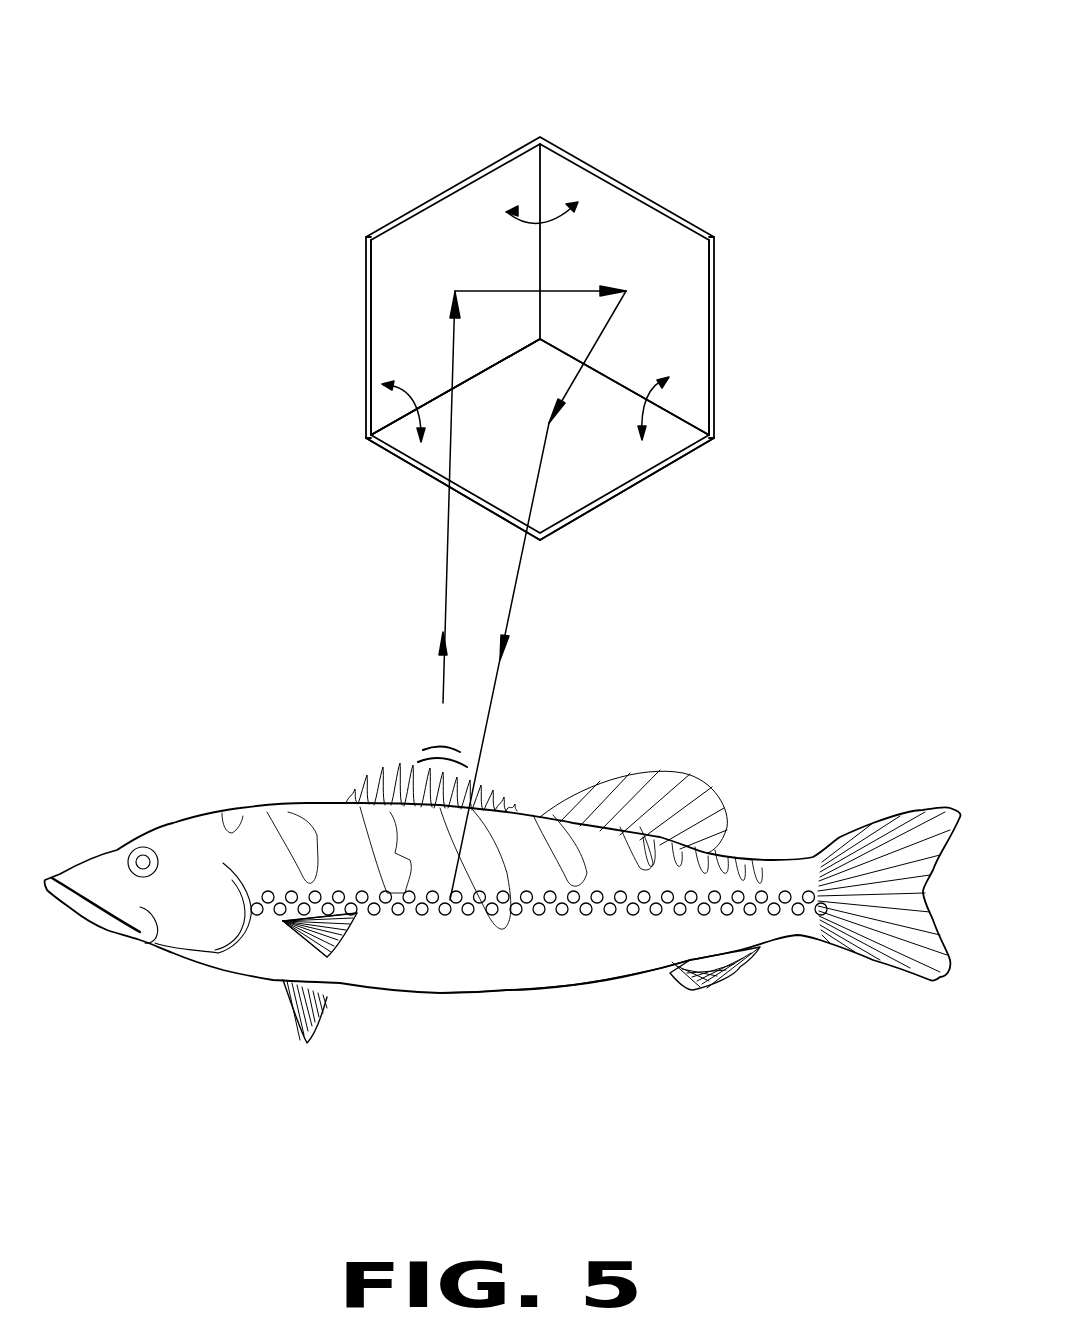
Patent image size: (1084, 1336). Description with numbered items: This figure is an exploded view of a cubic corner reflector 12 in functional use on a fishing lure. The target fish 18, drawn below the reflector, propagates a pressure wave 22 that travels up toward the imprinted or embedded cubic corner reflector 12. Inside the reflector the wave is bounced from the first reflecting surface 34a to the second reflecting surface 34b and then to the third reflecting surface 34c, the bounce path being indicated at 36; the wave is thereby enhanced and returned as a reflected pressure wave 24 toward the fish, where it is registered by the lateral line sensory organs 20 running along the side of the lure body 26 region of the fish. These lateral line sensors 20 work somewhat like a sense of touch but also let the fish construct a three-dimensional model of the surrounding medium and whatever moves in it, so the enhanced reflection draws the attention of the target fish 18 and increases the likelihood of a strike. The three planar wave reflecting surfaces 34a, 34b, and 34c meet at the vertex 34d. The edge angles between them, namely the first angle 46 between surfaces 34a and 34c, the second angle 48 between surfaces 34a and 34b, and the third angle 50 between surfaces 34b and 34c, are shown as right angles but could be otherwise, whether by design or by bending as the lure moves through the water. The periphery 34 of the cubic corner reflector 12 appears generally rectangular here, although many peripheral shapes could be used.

The cubic corner reflector 12 is at (540, 137).
The target fish 18 is at (170, 927).
The lateral line sensory organs 20 is at (470, 903).
The propagated pressure wave 22 is at (438, 747).
The reflected pressure wave 24 is at (490, 697).
The lure body 26 is at (558, 967).
The periphery of wave reflecting indentation 34 is at (397, 220).
The first reflecting surface 34a is at (383, 278).
The second reflecting surface 34b is at (693, 302).
The third reflecting surface 34c is at (573, 470).
The vertex 34d is at (548, 341).
The corner cube wave bounce 36 is at (490, 289).
The first angle 46 is at (425, 403).
The second angle 48 is at (543, 217).
The third angle 50 is at (648, 400).